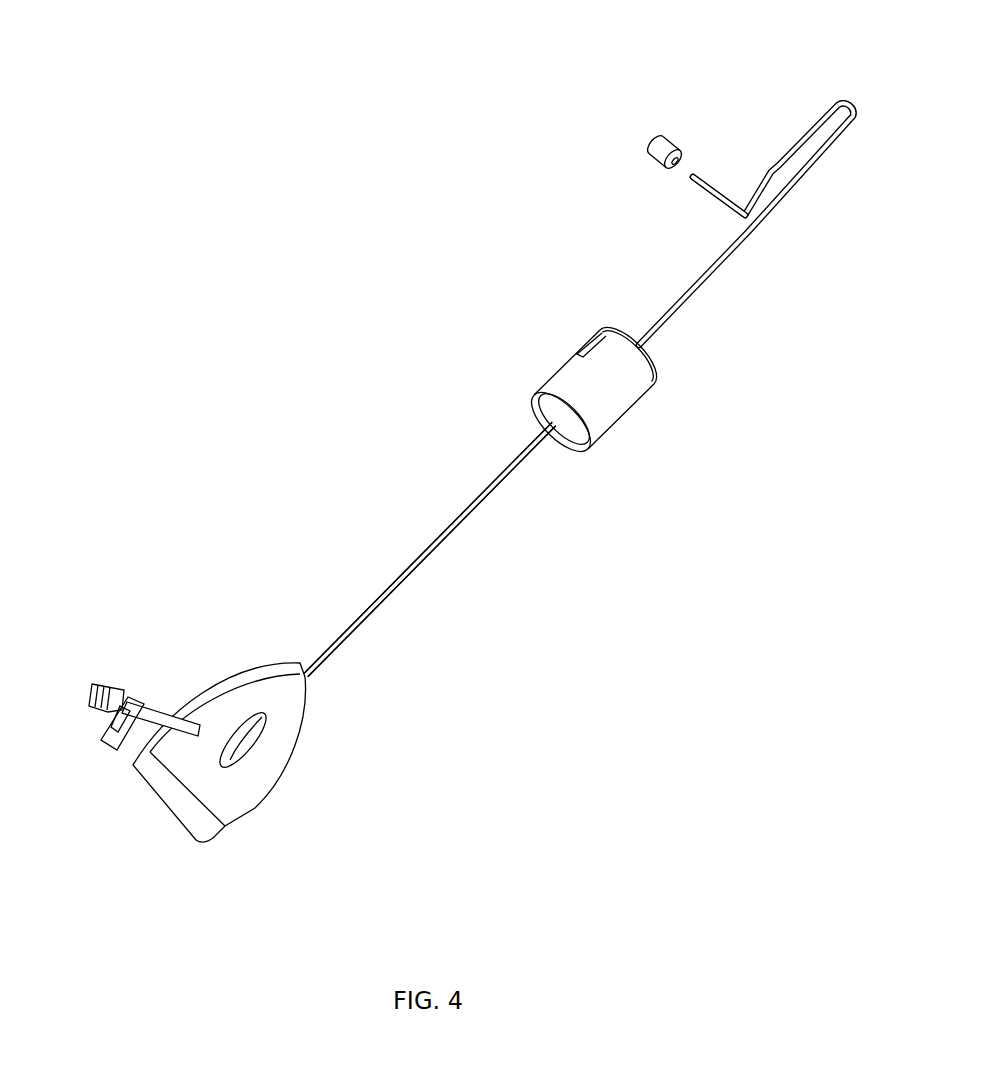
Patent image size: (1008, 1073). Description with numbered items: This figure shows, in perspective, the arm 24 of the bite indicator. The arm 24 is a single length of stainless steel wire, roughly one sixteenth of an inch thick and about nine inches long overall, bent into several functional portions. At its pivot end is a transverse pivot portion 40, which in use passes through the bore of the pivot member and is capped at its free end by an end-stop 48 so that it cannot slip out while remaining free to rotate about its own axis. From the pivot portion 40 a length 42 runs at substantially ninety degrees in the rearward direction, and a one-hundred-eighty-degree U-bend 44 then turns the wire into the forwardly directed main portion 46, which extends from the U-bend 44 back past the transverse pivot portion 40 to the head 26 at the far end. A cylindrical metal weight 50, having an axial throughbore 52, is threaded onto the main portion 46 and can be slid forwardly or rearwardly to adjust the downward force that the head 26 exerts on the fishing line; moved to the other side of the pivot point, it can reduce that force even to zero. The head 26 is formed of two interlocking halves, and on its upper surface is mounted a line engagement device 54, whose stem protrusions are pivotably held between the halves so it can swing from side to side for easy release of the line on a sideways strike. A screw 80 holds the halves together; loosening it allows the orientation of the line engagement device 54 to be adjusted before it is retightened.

The arm 24 is at (410, 575).
The head 26 is at (273, 780).
The transverse pivot portion 40 is at (718, 200).
The length 42 is at (807, 130).
The U-bend 44 is at (857, 101).
The main portion 46 is at (453, 523).
The end-stop 48 is at (645, 145).
The weight 50 is at (563, 358).
The axial throughbore 52 is at (553, 423).
The line engagement device 54 is at (100, 681).
The screw 80 is at (240, 727).